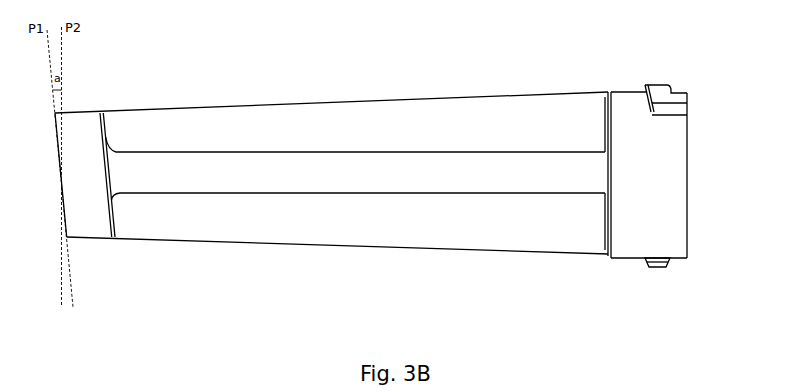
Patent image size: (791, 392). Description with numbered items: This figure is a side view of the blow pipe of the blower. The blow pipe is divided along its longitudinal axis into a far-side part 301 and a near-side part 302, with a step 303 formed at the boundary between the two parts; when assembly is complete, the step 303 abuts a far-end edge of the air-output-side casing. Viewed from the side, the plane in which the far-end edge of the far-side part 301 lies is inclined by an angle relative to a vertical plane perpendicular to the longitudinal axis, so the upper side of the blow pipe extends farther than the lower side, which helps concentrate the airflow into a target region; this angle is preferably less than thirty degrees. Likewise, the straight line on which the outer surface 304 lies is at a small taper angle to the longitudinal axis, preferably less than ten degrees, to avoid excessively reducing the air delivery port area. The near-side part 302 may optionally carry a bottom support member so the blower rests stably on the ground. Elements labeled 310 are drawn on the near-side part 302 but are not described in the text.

The far-side part 301 is at (312, 127).
The near-side part 302 is at (636, 108).
The step 303 is at (608, 255).
The outer surface 304 is at (408, 100).
The latch tab 310 is at (658, 82).